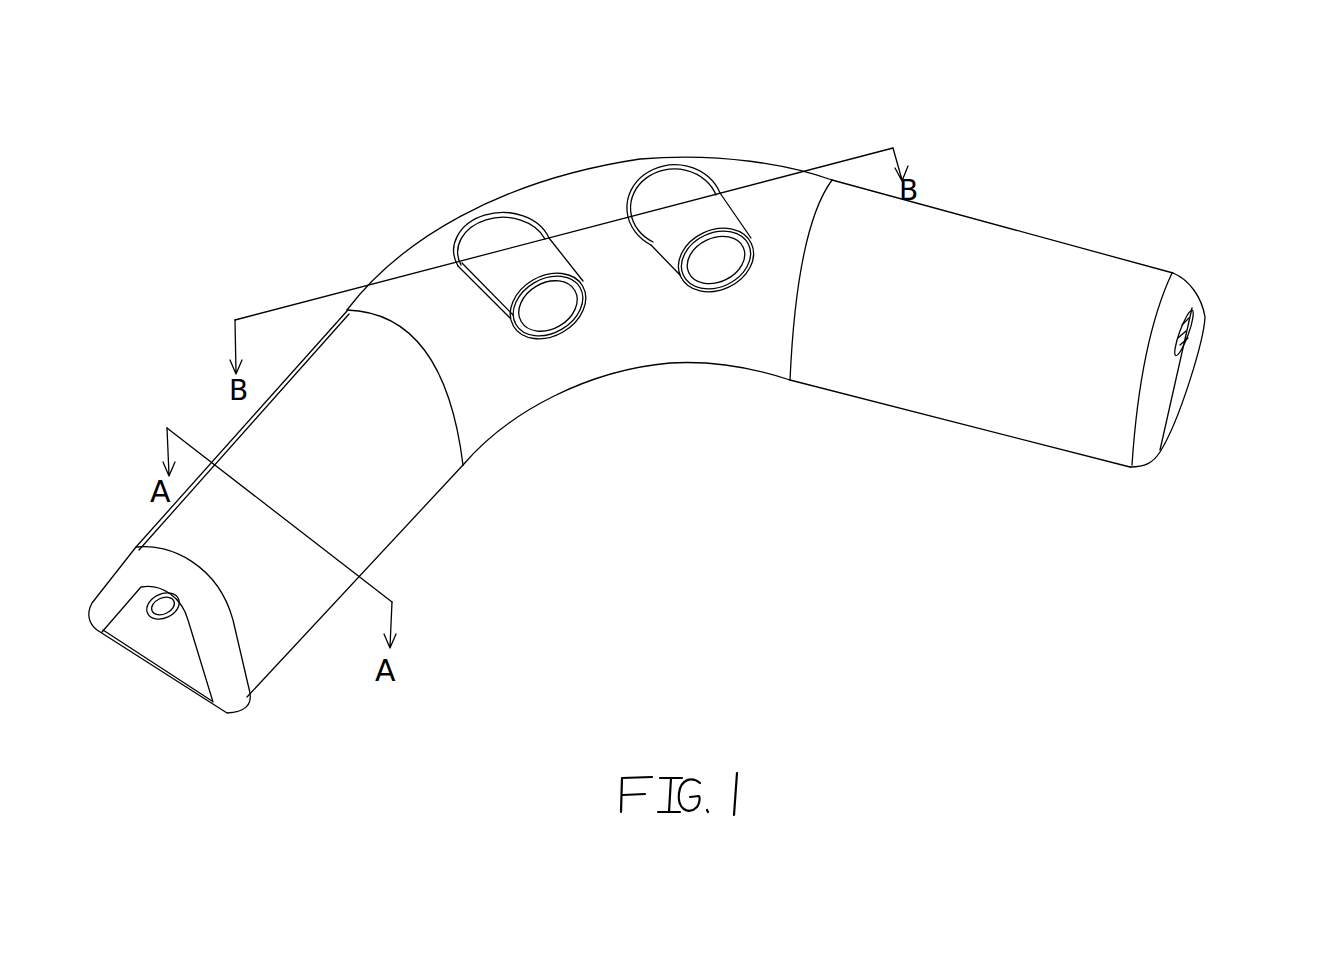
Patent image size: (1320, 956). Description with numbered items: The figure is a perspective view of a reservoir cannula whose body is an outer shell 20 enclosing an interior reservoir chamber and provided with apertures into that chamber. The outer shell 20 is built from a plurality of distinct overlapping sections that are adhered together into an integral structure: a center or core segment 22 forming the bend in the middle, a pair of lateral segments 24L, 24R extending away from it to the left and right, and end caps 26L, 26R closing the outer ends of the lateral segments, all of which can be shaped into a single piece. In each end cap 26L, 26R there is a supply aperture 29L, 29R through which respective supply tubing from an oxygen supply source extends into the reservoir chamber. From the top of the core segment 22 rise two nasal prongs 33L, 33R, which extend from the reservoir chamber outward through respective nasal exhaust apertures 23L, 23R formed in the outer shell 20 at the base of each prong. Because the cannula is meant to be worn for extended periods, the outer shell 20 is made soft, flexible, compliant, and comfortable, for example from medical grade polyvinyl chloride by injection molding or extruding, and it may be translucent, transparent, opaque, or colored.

The outer shell 20 is at (700, 430).
The center or core segment 22 is at (653, 336).
The nasal exhaust aperture 23L is at (469, 229).
The nasal exhaust aperture 23R is at (662, 257).
The lateral segment 24L is at (371, 467).
The lateral segment 24R is at (996, 344).
The end cap 26L is at (186, 666).
The end cap 26R is at (1220, 355).
The supply aperture 29L is at (166, 603).
The supply aperture 29R is at (1188, 334).
The nasal prong 33L is at (473, 220).
The nasal prong 33R is at (707, 256).